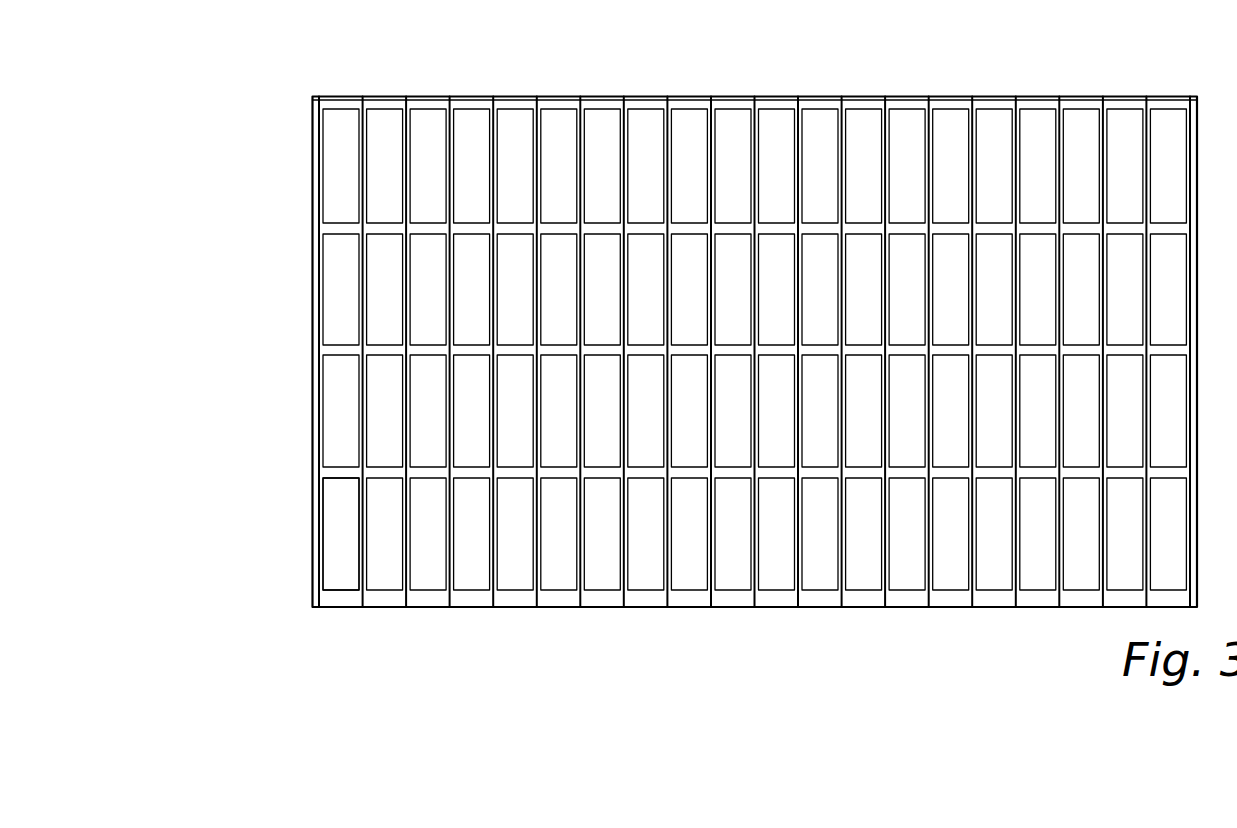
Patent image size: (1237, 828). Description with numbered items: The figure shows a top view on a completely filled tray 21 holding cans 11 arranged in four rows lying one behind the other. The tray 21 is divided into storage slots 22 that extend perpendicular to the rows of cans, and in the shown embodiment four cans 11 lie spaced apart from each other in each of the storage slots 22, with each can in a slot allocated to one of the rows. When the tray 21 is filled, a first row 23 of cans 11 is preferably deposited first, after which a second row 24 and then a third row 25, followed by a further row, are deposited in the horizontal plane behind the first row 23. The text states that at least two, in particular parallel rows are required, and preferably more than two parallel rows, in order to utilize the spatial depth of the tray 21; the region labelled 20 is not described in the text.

The can 11 is at (342, 537).
The tray 21 is at (1142, 103).
The storage slot 22 is at (346, 614).
The first row of cells 20 is at (292, 168).
The third row 25 is at (298, 298).
The second row 24 is at (282, 408).
The first row 23 is at (275, 516).